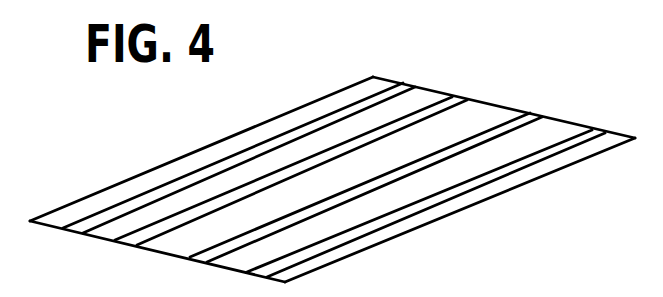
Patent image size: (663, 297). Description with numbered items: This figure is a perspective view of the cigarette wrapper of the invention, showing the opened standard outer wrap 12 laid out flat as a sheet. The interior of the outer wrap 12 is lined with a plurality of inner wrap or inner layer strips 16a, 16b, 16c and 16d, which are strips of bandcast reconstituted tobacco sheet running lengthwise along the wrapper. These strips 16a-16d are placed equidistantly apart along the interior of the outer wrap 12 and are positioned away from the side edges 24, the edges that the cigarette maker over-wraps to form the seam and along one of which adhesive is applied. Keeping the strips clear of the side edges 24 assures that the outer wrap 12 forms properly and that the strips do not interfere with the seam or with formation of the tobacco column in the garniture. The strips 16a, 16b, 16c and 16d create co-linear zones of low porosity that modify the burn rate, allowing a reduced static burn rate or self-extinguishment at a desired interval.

The outer wrap 12 is at (495, 117).
The inner wrap strip 16a is at (404, 84).
The inner wrap strip 16b is at (456, 98).
The inner wrap strip 16c is at (531, 113).
The inner wrap strip 16d is at (593, 130).
The side edges 24 is at (224, 140).